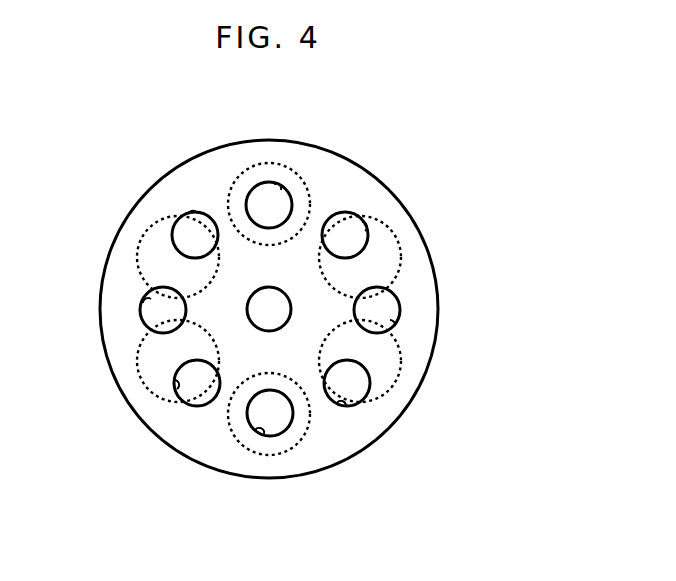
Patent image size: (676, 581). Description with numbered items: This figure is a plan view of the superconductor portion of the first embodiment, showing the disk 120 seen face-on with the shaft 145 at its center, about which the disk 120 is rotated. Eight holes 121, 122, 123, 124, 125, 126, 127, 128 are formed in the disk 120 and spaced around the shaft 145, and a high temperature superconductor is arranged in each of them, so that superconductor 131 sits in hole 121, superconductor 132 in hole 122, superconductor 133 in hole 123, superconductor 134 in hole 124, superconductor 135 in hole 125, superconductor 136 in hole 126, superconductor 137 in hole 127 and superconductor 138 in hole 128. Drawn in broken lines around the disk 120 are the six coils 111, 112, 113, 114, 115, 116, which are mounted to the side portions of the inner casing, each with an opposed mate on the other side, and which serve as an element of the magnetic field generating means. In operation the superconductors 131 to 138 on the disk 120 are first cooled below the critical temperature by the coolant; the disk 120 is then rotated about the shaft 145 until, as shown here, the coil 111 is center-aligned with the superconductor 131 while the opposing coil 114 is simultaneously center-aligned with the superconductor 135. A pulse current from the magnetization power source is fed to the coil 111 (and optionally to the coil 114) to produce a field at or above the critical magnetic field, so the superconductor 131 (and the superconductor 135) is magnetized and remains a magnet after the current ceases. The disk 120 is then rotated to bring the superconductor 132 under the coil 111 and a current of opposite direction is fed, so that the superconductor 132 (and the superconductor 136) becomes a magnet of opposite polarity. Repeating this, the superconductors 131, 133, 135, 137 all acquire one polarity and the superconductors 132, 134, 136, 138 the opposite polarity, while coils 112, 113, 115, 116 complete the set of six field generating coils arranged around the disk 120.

The disk 120 is at (228, 143).
The coil 111 is at (298, 177).
The coil 112 is at (401, 262).
The coil 113 is at (400, 380).
The coil 114 is at (234, 438).
The coil 115 is at (140, 362).
The coil 116 is at (139, 240).
The hole 121 is at (287, 184).
The hole 122 is at (365, 230).
The hole 123 is at (395, 322).
The hole 124 is at (344, 406).
The hole 125 is at (249, 436).
The hole 126 is at (175, 388).
The hole 127 is at (146, 300).
The hole 128 is at (193, 212).
The superconductor 131 is at (274, 186).
The superconductor 132 is at (351, 212).
The superconductor 133 is at (398, 297).
The superconductor 134 is at (373, 396).
The superconductor 135 is at (283, 445).
The superconductor 136 is at (183, 405).
The superconductor 137 is at (142, 312).
The superconductor 138 is at (172, 226).
The shaft 145 is at (278, 290).